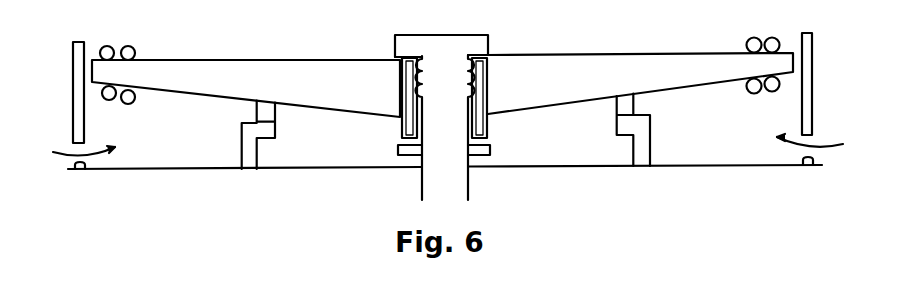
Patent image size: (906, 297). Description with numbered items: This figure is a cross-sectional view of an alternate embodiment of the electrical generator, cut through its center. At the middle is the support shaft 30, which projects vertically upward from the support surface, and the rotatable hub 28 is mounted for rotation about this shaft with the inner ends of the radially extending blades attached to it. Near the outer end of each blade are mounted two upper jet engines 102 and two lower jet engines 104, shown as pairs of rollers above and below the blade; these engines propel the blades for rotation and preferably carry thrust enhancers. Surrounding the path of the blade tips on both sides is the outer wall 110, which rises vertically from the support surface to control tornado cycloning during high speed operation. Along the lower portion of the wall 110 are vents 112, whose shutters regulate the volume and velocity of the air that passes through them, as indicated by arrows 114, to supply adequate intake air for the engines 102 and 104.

The rotatable hub 28 is at (487, 128).
The support shaft 30 is at (465, 35).
The upper jet engines 102 is at (135, 50).
The lower jet engines 104 is at (129, 103).
The outer wall 110 is at (84, 42).
The vents 112 is at (86, 158).
The arrows 114 is at (71, 144).